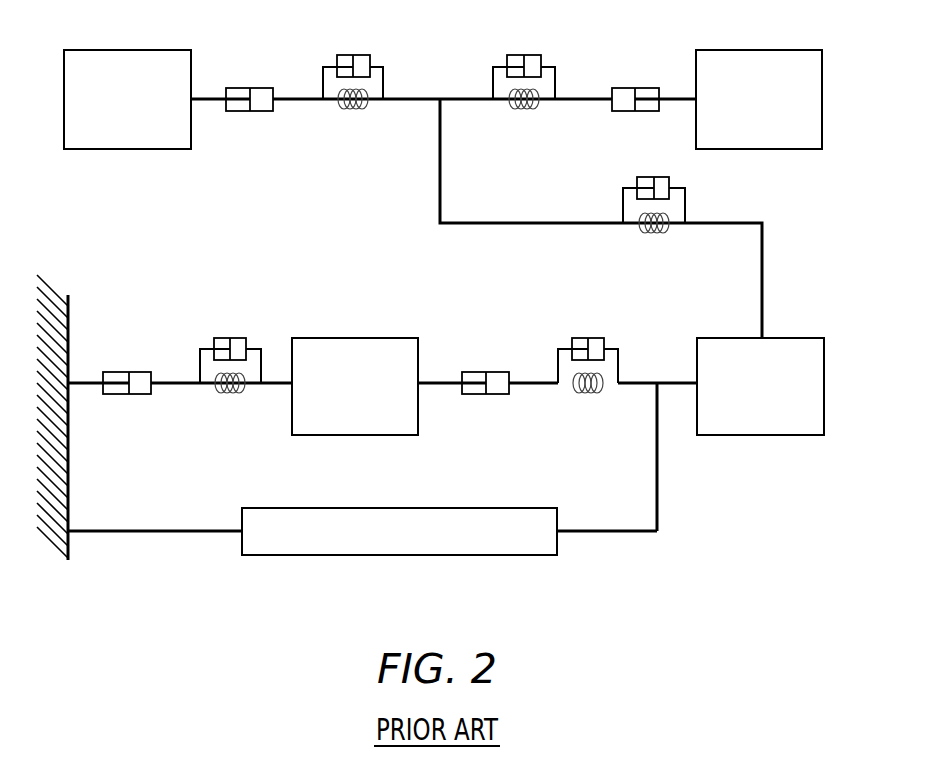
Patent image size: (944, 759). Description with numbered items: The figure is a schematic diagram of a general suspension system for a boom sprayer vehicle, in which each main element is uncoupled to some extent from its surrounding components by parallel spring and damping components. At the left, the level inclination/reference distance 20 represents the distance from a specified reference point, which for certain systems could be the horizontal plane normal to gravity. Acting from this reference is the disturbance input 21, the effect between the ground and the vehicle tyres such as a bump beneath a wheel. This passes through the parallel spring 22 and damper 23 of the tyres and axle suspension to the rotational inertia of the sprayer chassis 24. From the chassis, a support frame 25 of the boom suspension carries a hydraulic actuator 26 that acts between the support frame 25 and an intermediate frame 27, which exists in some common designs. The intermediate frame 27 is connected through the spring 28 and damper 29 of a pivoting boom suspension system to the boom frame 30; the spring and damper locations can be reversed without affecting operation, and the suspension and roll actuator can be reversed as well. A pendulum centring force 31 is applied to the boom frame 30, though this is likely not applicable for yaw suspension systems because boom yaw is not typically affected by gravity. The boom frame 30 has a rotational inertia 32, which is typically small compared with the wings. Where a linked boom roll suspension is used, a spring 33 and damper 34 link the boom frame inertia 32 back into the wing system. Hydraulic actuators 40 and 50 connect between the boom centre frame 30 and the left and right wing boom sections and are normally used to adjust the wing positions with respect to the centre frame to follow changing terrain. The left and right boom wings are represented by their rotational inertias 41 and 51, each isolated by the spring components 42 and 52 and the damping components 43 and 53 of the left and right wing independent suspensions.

The level inclination/reference distance 20 is at (68, 452).
The disturbance input 21 is at (117, 372).
The spring component of tyres and axle suspension 22 is at (232, 396).
The damping component of tyres and axle suspension 23 is at (233, 338).
The rotational inertia of sprayer chassis 24 is at (352, 338).
The support frame 25 is at (441, 386).
The hydraulic actuator 26 is at (482, 372).
The intermediate frame 27 is at (527, 386).
The spring component of pivoting boom suspension 28 is at (590, 396).
The damper component of pivoting boom suspension 29 is at (590, 338).
The boom frame 30 is at (648, 380).
The pendulum centring force 31 is at (393, 556).
The rotational inertia of boom frame 32 is at (754, 436).
The spring for linked boom roll suspension 33 is at (655, 235).
The damper for linked boom roll suspension 34 is at (645, 177).
The hydraulic actuator 40 is at (238, 88).
The rotational inertia of left boom wing 41 is at (122, 149).
The spring component of left wing independent suspension 42 is at (353, 112).
The damping component of left wing independent suspension 43 is at (355, 55).
The hydraulic actuator 50 is at (645, 88).
The rotational inertia of right boom wing 51 is at (754, 50).
The spring component of right wing independent suspension 52 is at (524, 112).
The damping component of right wing independent suspension 53 is at (524, 55).